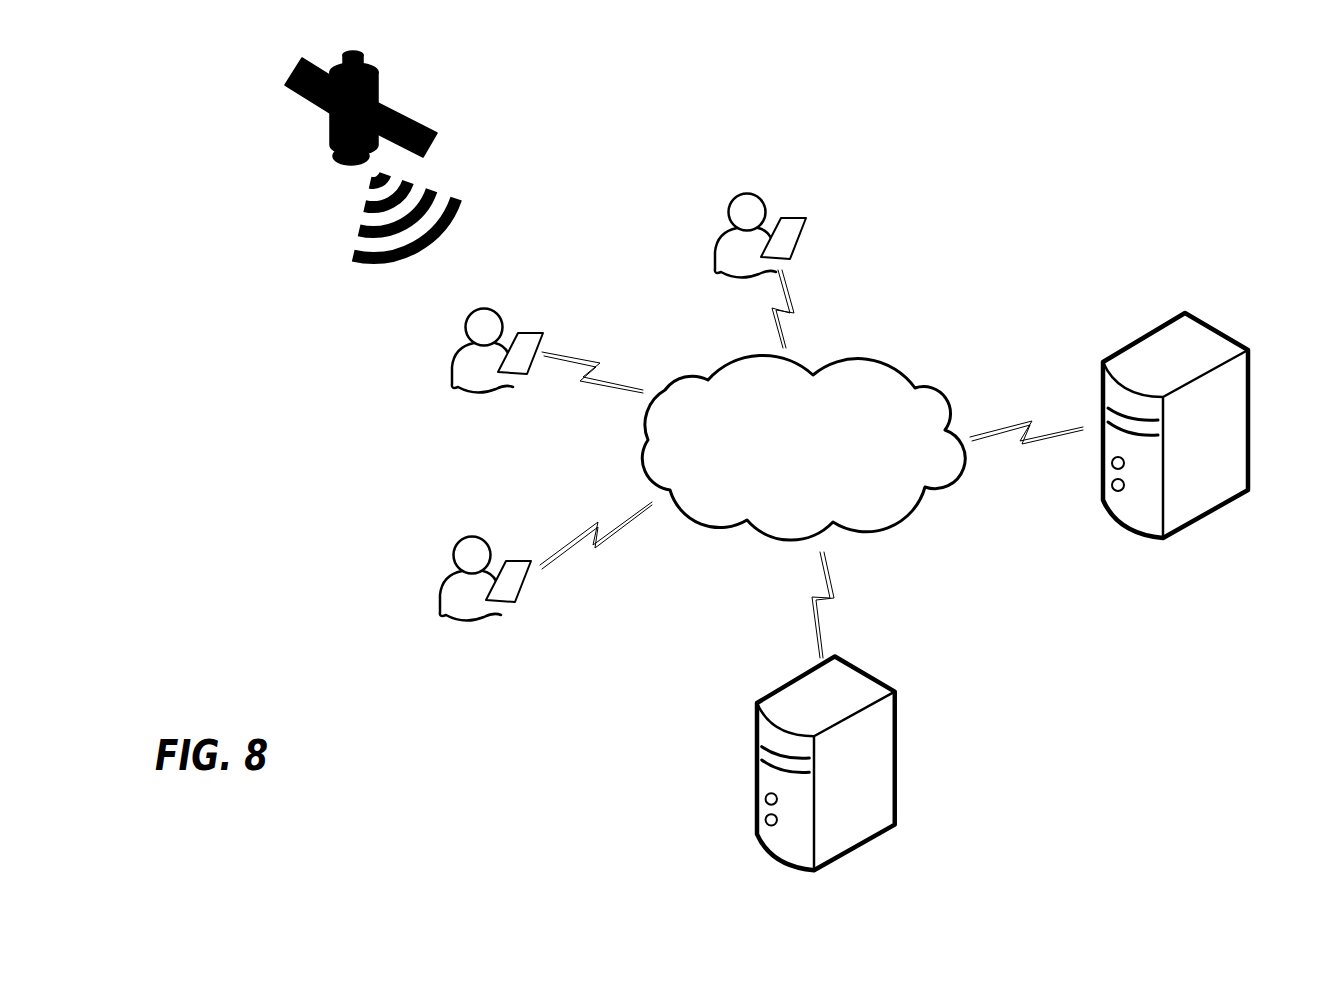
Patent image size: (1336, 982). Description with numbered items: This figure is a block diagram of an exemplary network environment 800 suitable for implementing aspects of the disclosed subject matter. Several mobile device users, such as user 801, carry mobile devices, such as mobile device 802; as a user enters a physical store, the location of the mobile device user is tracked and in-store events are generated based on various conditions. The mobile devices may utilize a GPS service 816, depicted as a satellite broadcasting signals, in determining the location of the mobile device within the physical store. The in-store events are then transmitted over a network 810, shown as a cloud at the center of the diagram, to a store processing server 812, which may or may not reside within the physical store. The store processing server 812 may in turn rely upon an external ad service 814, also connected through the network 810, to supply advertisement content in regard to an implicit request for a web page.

The network environment 800 is at (996, 172).
The user 801 is at (463, 343).
The mobile device 802 is at (545, 333).
The network 810 is at (903, 370).
The store processing server 812 is at (1165, 320).
The external ad service 814 is at (765, 768).
The GPS service 816 is at (285, 87).